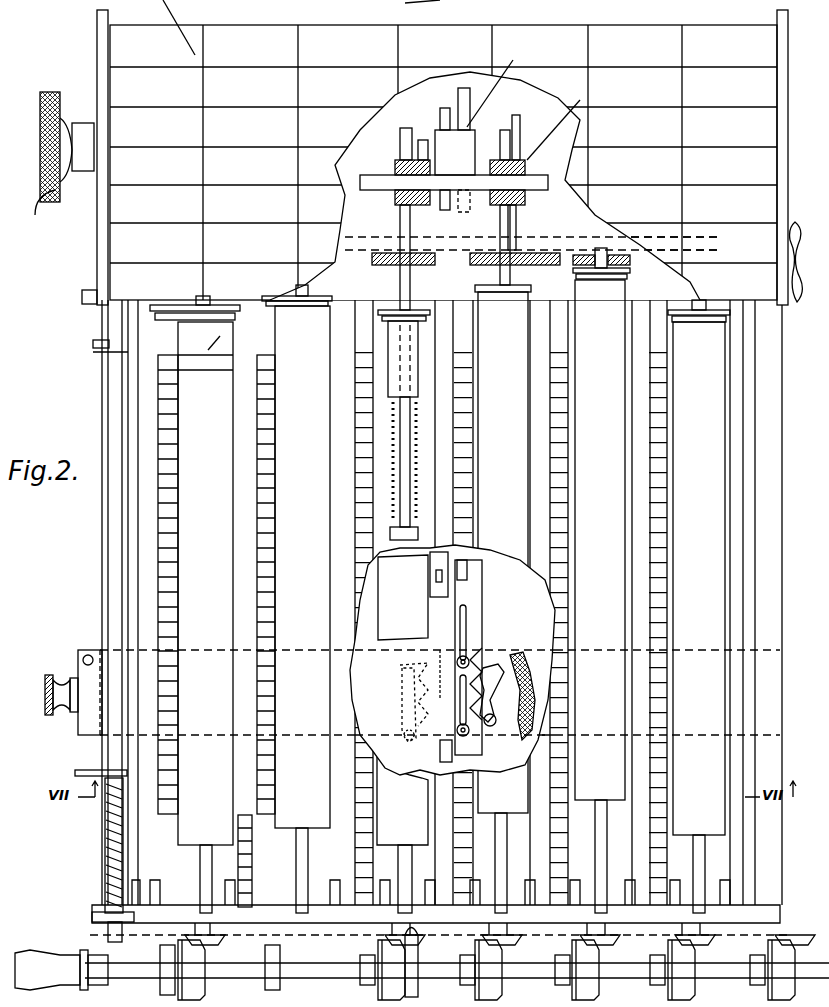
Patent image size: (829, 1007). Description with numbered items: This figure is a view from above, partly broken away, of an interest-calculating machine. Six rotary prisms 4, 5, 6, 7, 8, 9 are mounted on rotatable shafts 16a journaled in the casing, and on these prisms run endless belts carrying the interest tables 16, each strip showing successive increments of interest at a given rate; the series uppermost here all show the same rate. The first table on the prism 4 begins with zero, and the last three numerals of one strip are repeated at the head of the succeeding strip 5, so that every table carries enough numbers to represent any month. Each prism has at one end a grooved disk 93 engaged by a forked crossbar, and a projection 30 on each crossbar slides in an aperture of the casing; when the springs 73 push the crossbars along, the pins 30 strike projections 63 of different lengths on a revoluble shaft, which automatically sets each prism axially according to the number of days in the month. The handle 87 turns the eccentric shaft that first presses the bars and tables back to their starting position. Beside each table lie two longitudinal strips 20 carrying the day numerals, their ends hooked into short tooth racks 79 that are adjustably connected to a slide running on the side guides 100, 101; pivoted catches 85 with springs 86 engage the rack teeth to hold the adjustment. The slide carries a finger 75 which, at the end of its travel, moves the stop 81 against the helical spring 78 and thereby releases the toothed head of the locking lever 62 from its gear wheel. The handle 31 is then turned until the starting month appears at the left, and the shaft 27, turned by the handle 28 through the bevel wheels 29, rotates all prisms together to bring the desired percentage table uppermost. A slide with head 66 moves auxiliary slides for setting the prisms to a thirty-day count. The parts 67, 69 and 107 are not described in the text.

The rotary prism 4 is at (196, 845).
The rotary prism 5 is at (292, 828).
The rotary prism 6 is at (392, 835).
The rotary prism 7 is at (490, 835).
The rotary prism 8 is at (590, 795).
The rotary prism 9 is at (690, 835).
The interest table 16 is at (158, 396).
The rotatable shaft 16a is at (180, 300).
The strip 20 is at (93, 345).
The shaft 27 is at (350, 972).
The handle 28 is at (45, 968).
The bevel wheel 29 is at (198, 970).
The projection 30 is at (405, 4).
The handle 31 is at (58, 158).
The lever 62 is at (85, 676).
The projection 63 is at (435, 262).
The head 66 is at (70, 0).
The clamp 67 is at (82, 298).
The guide 69 is at (95, 352).
The spring 73 is at (418, 450).
The finger 75 is at (87, 652).
The helical spring 78 is at (105, 888).
The tooth rack 79 is at (468, 618).
The stop 81 is at (75, 774).
The catch 85 is at (400, 668).
The spring 86 is at (402, 700).
The handle 87 is at (798, 252).
The disk 93 is at (728, 315).
The side guide 100 is at (102, 522).
The side guide 101 is at (759, 457).
The cam 107 is at (535, 696).